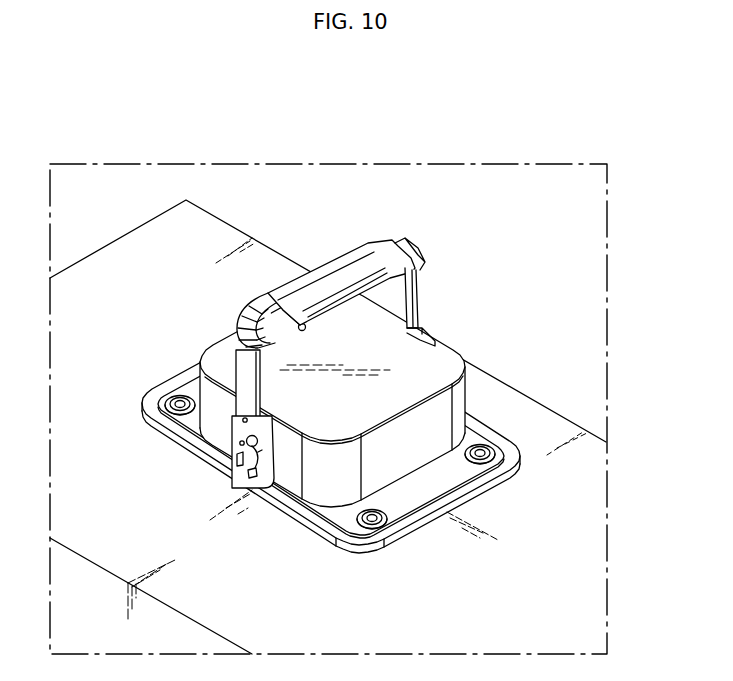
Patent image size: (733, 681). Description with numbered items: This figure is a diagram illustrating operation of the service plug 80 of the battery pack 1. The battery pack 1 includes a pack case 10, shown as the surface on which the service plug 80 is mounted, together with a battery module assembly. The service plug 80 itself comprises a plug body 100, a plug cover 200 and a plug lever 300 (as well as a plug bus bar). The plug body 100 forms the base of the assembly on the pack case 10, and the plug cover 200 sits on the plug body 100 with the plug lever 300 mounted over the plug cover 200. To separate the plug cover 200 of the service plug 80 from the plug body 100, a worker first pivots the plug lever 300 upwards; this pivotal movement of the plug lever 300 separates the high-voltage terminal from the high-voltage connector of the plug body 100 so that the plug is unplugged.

The battery pack 1 is at (60, 135).
The pack case 10 is at (275, 268).
The service plug 80 is at (346, 348).
The plug body 100 is at (442, 481).
The plug cover 200 is at (455, 366).
The plug lever 300 is at (356, 258).